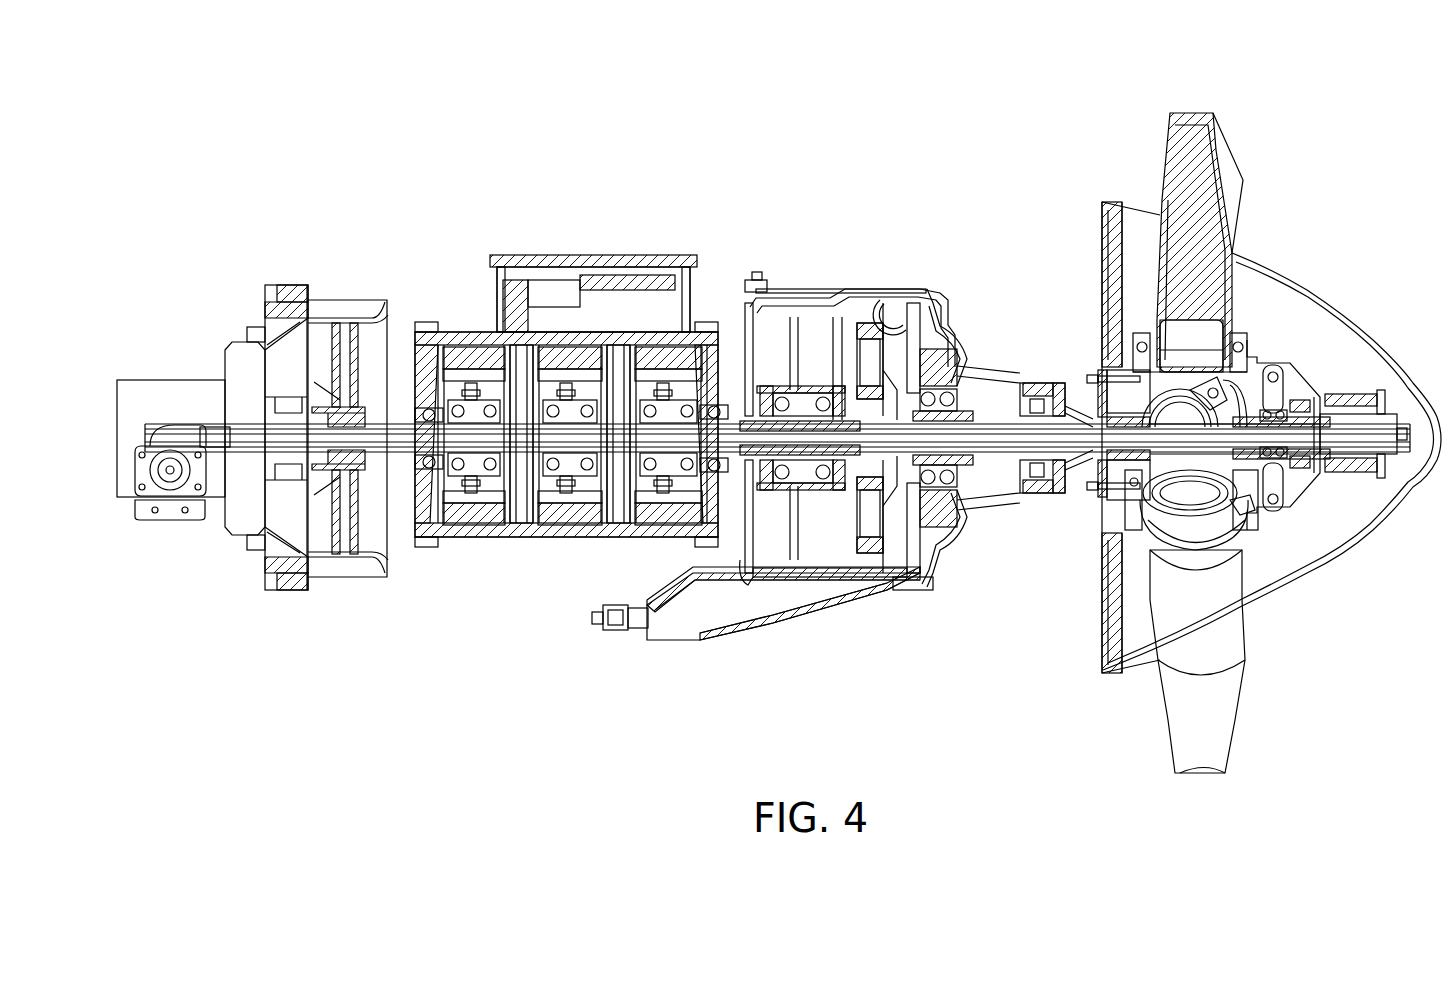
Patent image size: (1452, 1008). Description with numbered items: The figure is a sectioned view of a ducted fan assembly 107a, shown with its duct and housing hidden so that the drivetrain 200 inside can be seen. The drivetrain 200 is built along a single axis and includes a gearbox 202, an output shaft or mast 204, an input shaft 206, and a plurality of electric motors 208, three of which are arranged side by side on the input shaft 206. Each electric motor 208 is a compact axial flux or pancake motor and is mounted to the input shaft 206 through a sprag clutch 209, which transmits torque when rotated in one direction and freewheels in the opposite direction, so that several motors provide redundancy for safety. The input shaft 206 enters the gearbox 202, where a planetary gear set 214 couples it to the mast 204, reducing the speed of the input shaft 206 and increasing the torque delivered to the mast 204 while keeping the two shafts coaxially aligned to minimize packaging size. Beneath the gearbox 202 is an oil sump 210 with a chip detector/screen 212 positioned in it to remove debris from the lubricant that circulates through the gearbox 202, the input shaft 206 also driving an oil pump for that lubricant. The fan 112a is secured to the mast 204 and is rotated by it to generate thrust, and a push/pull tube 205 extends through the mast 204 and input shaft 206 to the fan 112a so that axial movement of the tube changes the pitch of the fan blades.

The drivetrain 200 is at (430, 155).
The gearbox 202 is at (820, 615).
The mast 204 is at (1076, 472).
The push/pull tube 205 is at (1075, 400).
The input shaft 206 is at (513, 545).
The electric motor 208 is at (483, 540).
The sprag clutch 209 is at (492, 398).
The oil sump 210 is at (725, 637).
The chip detector/screen 212 is at (640, 632).
The planetary gear set 214 is at (884, 320).
The fan 112a is at (1262, 205).
The ducted fan assembly 107a is at (1373, 663).